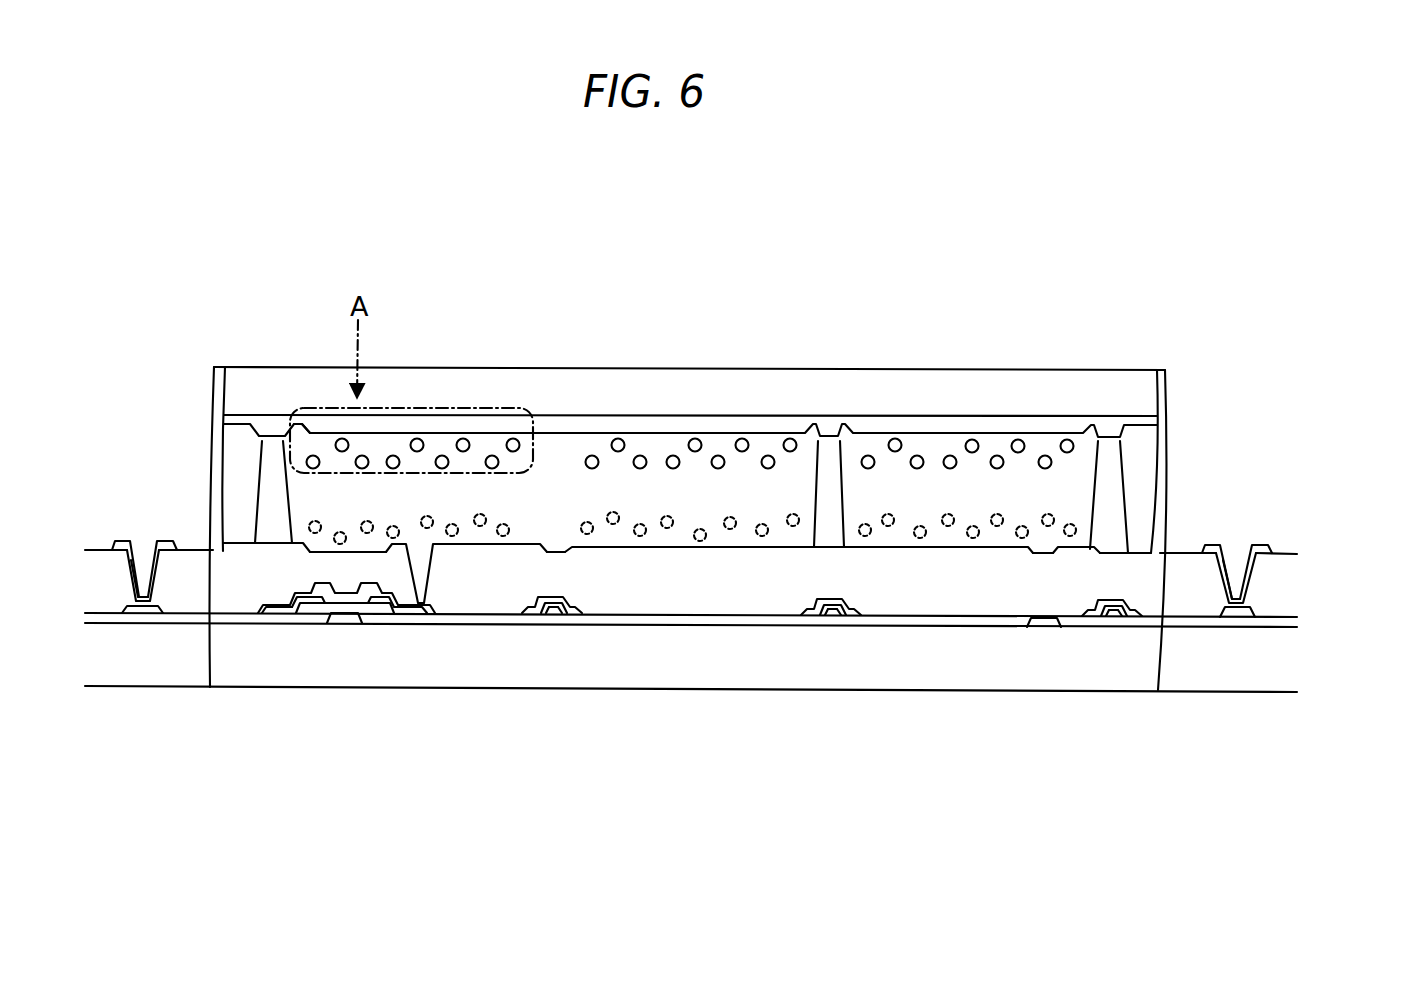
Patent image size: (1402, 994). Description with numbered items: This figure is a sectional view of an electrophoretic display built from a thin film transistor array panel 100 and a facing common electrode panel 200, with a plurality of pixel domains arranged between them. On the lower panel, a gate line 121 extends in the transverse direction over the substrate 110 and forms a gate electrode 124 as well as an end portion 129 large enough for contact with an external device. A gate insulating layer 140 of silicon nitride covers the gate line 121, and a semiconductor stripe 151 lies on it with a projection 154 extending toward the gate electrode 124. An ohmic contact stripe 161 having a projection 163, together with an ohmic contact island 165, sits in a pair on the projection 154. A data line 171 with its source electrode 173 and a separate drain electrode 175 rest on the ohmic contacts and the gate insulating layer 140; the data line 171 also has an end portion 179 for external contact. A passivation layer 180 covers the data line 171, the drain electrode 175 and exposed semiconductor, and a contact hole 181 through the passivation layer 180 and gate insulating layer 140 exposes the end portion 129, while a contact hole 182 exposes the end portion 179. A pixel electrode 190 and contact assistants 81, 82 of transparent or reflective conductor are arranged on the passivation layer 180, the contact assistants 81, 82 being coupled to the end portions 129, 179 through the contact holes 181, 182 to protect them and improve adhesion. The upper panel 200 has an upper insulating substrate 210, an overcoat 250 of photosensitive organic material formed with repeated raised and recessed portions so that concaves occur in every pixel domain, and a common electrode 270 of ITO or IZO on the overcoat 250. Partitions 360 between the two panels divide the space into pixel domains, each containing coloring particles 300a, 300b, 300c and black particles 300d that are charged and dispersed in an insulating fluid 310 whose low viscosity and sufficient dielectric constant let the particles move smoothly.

The thin film transistor array panel 100 is at (1318, 599).
The common electrode panel 200 is at (1198, 419).
The substrate 110 is at (993, 672).
The gate line 121 is at (1042, 627).
The gate electrode 124 is at (343, 620).
The end portion of gate line 129 is at (143, 612).
The gate insulating layer 140 is at (940, 618).
The semiconductor stripe 151 is at (543, 608).
The projection of semiconductor stripe 154 is at (382, 606).
The ohmic contact stripe 161 is at (557, 608).
The projection of ohmic contact stripe 163 is at (308, 605).
The ohmic contact island 165 is at (364, 605).
The data line 171 is at (265, 614).
The source electrode 173 is at (322, 600).
The drain electrode 175 is at (425, 609).
The end portion of data line 179 is at (1238, 617).
The passivation layer 180 is at (635, 590).
The contact hole 181 is at (138, 565).
The contact hole 182 is at (1230, 568).
The pixel electrode 190 is at (727, 548).
The contact assistant 81 is at (176, 543).
The contact assistant 82 is at (1268, 545).
The upper insulating substrate 210 is at (1007, 388).
The overcoat 250 is at (827, 437).
The common electrode 270 is at (705, 430).
The coloring particle 300a is at (417, 438).
The coloring particle 300b is at (618, 438).
The coloring particle 300c is at (895, 438).
The black particle 300d is at (481, 514).
The insulating fluid 310 is at (305, 450).
The partition 360 is at (533, 522).